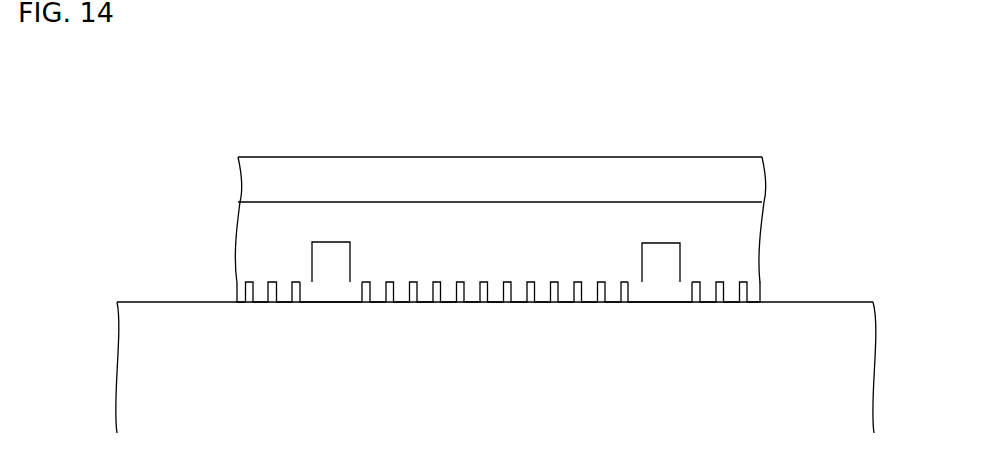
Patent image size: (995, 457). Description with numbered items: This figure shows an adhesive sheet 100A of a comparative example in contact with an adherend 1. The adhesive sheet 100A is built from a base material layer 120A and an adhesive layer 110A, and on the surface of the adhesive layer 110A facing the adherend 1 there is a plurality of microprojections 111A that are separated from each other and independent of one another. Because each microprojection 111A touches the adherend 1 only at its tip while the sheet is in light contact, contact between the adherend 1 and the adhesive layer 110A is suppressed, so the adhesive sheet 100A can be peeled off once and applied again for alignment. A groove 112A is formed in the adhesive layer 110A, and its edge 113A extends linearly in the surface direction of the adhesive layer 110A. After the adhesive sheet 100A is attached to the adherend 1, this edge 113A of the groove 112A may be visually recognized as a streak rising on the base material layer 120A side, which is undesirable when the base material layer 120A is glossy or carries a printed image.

The adhesive sheet 100A is at (724, 124).
The base material layer 120A is at (265, 181).
The adhesive layer 110A is at (265, 232).
The microprojections 111A is at (550, 292).
The groove 112A is at (668, 262).
The edge 113A is at (641, 282).
The adherend 1 is at (793, 299).